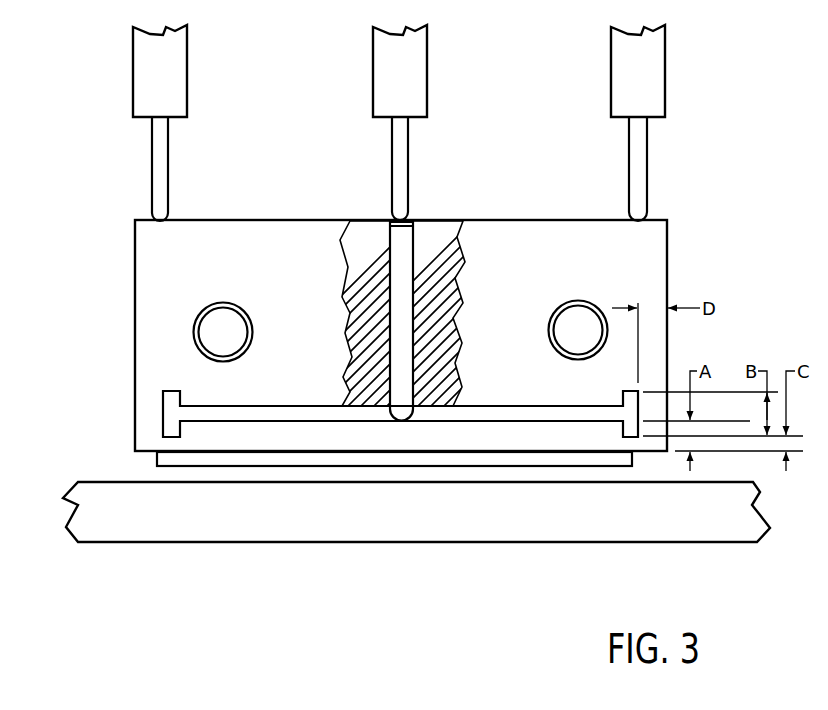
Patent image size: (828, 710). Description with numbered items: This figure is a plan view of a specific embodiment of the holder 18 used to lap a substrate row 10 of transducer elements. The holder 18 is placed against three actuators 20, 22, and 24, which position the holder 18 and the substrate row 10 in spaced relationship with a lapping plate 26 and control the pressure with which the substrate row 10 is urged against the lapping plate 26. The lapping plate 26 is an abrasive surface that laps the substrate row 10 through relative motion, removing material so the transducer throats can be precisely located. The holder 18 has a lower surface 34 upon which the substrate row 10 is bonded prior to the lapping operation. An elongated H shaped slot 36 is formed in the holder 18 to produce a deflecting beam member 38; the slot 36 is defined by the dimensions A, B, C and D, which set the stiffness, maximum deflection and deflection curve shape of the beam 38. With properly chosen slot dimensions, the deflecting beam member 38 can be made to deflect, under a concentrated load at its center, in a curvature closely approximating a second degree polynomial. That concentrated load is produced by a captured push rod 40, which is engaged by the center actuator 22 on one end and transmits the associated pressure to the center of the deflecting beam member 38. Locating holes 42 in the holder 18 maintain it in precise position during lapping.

The substrate row 10 is at (518, 458).
The holder 18 is at (142, 370).
The actuator 20 is at (178, 78).
The actuator 22 is at (414, 77).
The actuator 24 is at (618, 88).
The lapping plate 26 is at (193, 518).
The lower surface 34 is at (147, 455).
The H shaped slot 36 is at (228, 413).
The deflecting beam member 38 is at (293, 438).
The captured push rod 40 is at (417, 224).
The locating holes 42 is at (197, 317).